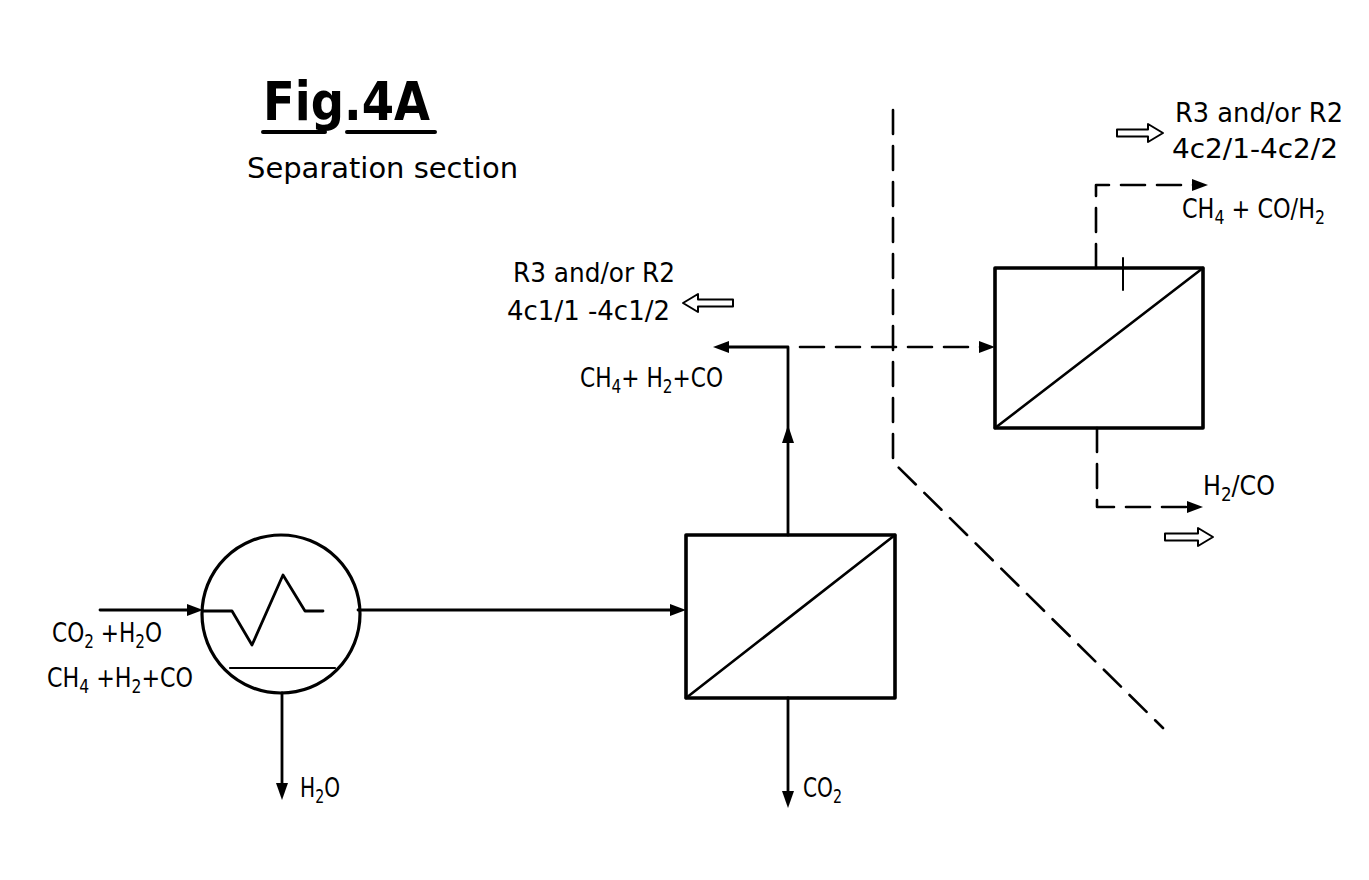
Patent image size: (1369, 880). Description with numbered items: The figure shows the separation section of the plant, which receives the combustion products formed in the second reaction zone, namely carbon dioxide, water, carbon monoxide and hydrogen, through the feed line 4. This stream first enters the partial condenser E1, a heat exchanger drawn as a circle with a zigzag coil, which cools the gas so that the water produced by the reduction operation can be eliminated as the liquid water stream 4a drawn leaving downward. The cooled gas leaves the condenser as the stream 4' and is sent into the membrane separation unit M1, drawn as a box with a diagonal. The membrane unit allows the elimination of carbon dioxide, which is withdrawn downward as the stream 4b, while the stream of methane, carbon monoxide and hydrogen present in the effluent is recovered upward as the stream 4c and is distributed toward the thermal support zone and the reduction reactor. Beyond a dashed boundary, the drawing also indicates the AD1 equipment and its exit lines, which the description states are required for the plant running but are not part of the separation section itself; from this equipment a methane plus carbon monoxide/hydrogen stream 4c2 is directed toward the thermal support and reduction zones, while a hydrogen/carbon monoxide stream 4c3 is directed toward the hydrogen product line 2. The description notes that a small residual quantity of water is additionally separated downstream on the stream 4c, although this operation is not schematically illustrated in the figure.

The combustion products stream 4 is at (151, 591).
The cooled combustion products stream 4' is at (522, 592).
The water stream 4a is at (282, 746).
The carbon dioxide stream 4b is at (788, 762).
The CH4, CO and H2 stream 4c is at (789, 420).
The CH4 + CO/H2 exit stream 4c2 is at (1135, 193).
The H2/CO exit stream 4c3 is at (1155, 491).
The hydrogen production line 2 is at (1228, 540).
The partial condenser E1 is at (275, 540).
The membrane separation unit M1 is at (895, 628).
The AD1 equipment AD1 is at (1203, 362).